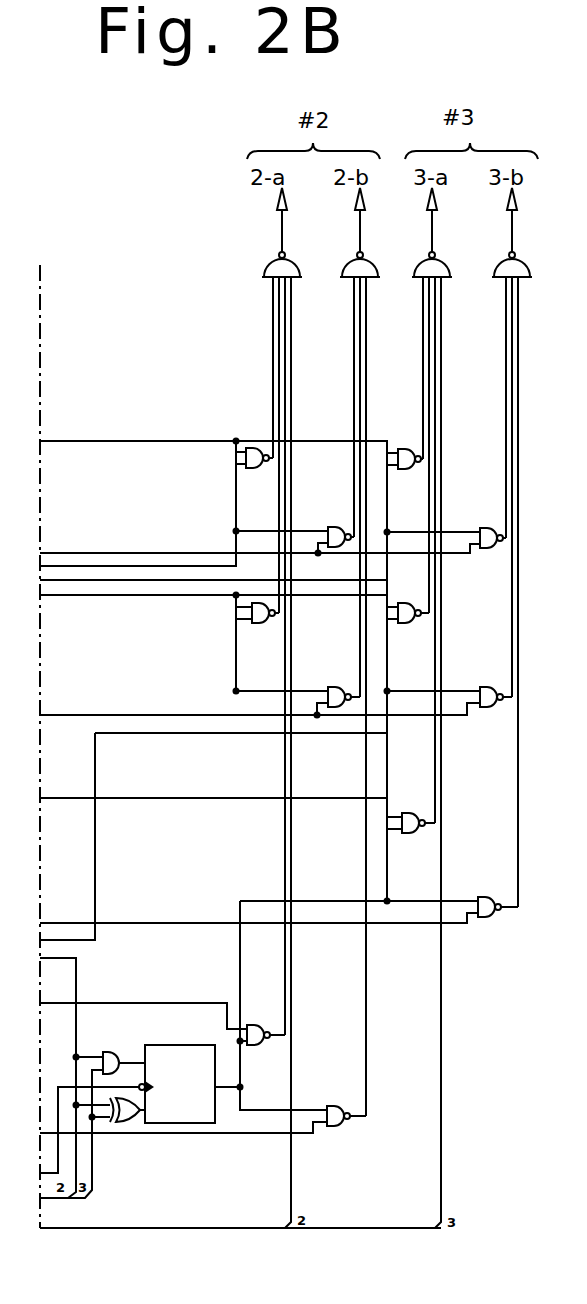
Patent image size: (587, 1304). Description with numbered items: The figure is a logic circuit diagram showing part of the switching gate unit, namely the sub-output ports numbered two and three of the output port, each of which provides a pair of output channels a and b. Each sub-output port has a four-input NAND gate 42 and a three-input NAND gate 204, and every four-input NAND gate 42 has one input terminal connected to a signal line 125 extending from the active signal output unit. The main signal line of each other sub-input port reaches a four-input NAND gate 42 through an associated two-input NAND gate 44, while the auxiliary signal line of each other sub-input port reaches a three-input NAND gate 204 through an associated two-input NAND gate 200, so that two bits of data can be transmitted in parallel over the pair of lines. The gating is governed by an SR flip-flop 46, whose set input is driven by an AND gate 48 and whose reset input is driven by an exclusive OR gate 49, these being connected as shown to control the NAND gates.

The 4-input NAND gate 42 is at (266, 270).
The three-input NAND gate 204 is at (346, 268).
The signal line 125 is at (273, 352).
The 2-input NAND gate 200 is at (250, 469).
The 2-input NAND gate 44 is at (259, 1046).
The SR flip-flop 46 is at (202, 1044).
The AND gate 48 is at (122, 1036).
The exclusive OR gate 49 is at (127, 1123).